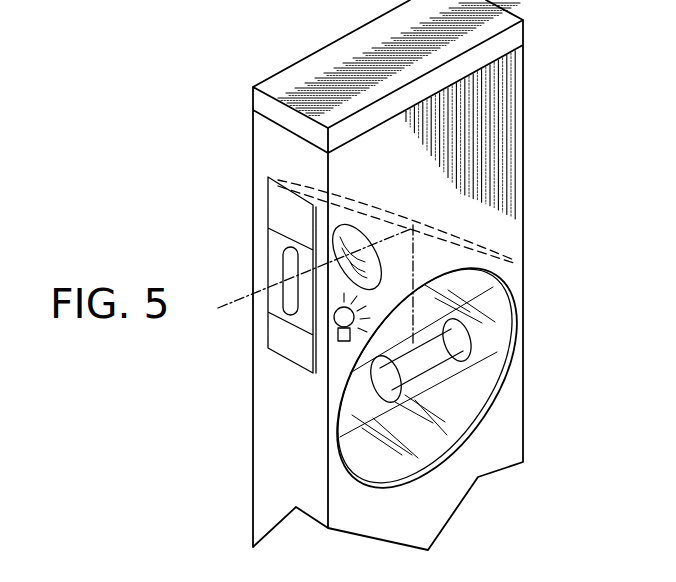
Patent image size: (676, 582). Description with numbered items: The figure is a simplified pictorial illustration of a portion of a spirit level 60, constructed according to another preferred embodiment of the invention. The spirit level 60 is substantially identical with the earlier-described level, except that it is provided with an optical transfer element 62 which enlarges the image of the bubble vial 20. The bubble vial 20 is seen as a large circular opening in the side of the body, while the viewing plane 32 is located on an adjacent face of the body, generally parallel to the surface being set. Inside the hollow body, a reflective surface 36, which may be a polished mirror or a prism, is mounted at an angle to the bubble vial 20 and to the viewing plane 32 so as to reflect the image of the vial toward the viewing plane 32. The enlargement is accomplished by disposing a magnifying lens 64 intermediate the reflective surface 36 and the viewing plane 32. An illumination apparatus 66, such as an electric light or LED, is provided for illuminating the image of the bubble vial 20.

The spirit level 60 is at (200, 141).
The viewing plane 32 is at (282, 213).
The magnifying lens 64 is at (357, 238).
The illumination apparatus 66 is at (340, 338).
The optical transfer element 62 is at (400, 212).
The reflective surface 36 is at (457, 237).
The bubble vial 20 is at (430, 373).